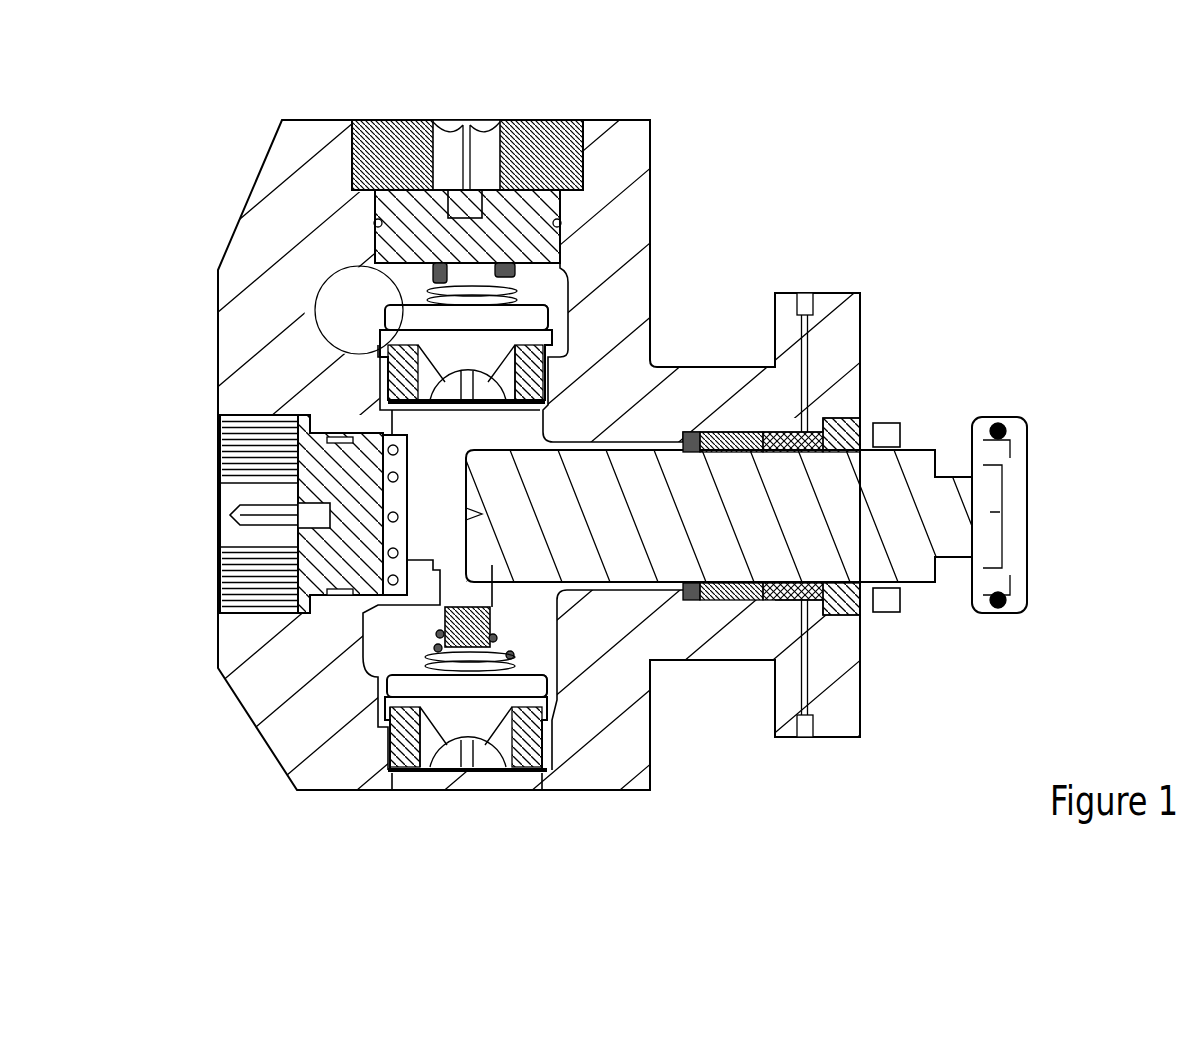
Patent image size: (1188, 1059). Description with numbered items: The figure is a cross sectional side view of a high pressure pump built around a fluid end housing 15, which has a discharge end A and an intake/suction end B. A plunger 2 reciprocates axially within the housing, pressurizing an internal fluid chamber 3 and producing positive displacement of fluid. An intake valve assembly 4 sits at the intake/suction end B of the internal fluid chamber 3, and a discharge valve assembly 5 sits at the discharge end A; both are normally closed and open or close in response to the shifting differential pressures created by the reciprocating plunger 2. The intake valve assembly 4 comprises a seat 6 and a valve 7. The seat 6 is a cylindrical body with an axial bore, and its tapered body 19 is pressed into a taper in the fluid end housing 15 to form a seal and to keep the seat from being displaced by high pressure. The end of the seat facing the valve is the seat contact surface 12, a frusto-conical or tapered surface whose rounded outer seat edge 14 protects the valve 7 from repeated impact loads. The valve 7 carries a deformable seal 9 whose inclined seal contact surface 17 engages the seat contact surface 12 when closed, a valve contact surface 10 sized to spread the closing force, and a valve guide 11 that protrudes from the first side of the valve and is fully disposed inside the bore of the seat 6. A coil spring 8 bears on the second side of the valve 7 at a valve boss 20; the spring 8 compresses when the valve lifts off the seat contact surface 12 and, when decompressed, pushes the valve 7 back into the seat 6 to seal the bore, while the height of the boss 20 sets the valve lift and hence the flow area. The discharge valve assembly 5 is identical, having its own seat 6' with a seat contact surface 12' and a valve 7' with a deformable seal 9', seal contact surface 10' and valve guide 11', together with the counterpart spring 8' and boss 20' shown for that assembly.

The plunger 2 is at (917, 450).
The internal fluid chamber 3 is at (543, 610).
The intake valve assembly 4 is at (463, 710).
The discharge valve assembly 5 is at (463, 340).
The seat 6 is at (388, 785).
The seat 6' is at (617, 365).
The valve 7 is at (349, 758).
The valve 7' is at (339, 395).
The spring 8 is at (344, 619).
The stop pin 8' is at (338, 246).
The deformable seal 9 is at (372, 713).
The deformable seal 9' is at (368, 348).
The valve contact surface 10 is at (368, 740).
The seal contact surface 10' is at (363, 375).
The valve guide 11 is at (309, 765).
The valve guide 11' is at (300, 399).
The seat contact surface 12 is at (631, 786).
The seat contact surface 12' is at (644, 349).
The outer seat edge 14 is at (530, 690).
The fluid end housing 15 is at (278, 193).
The seal contact surface 17 is at (523, 333).
The tapered body 19 is at (543, 760).
The valve boss 20 is at (338, 650).
The spring 20' is at (343, 290).
The discharge end A is at (463, 118).
The intake/suction end B is at (472, 793).